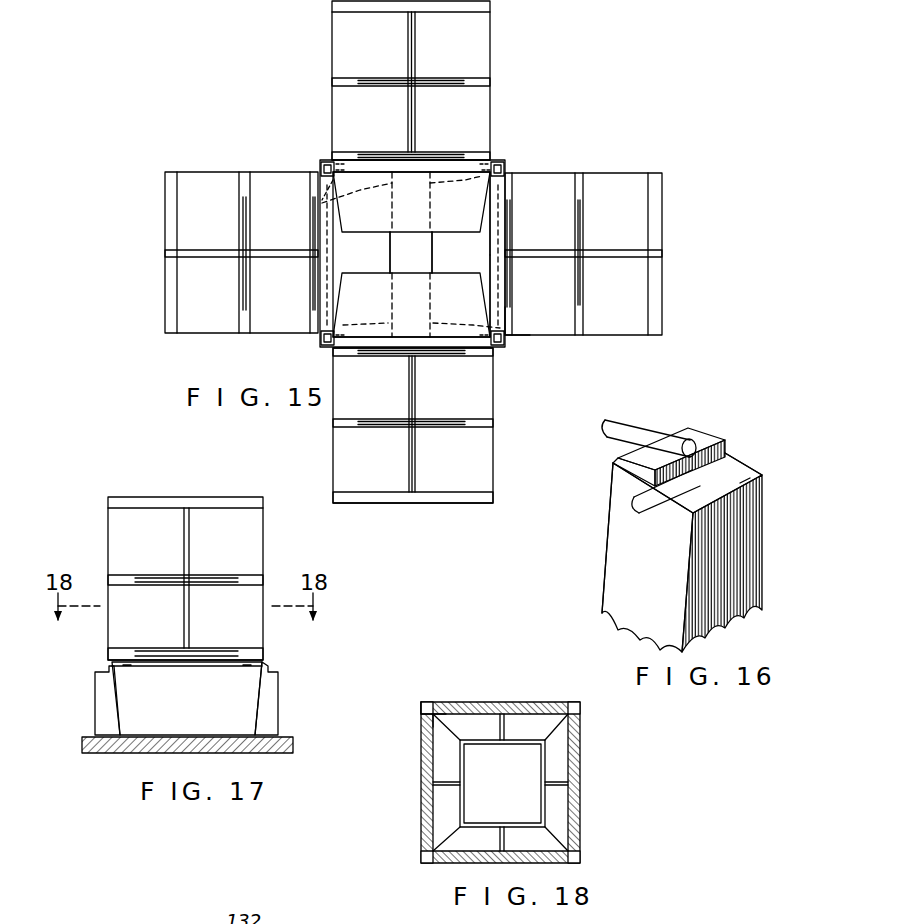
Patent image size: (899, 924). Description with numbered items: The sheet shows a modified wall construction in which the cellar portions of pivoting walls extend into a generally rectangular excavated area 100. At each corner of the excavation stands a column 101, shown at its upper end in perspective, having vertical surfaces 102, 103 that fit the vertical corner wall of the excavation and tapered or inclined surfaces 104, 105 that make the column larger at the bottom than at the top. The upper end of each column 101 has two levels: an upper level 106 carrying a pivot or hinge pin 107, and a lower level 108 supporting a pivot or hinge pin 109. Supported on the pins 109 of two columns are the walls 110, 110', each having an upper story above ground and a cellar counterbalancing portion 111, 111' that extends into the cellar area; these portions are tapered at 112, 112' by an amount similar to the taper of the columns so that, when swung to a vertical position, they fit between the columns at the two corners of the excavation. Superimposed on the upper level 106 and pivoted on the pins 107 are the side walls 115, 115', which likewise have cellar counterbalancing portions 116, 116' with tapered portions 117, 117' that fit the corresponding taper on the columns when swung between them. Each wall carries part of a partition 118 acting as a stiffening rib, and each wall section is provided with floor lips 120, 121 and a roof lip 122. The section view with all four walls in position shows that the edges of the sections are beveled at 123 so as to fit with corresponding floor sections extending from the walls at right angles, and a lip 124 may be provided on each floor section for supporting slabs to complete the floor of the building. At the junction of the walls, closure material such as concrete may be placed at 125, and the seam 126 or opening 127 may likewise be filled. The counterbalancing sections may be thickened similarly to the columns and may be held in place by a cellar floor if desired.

In FIG. 15, the excavated area 100 is at (415, 263).
In FIG. 15, the column 101 is at (322, 162).
In FIG. 17, the column 101 is at (90, 713).
In FIG. 16, the column 101 is at (600, 548).
In FIG. 16, the vertical surface 102 is at (737, 468).
In FIG. 16, the vertical surface 103 is at (738, 550).
In FIG. 16, the tapered surface 104 is at (622, 590).
In FIG. 17, the tapered surface 105 is at (258, 713).
In FIG. 16, the tapered surface 105 is at (612, 507).
In FIG. 16, the upper level 106 is at (696, 433).
In FIG. 16, the pivot or hinge pin 107 is at (664, 405).
In FIG. 16, the lower level 108 is at (742, 484).
In FIG. 16, the pivot or hinge pin 109 is at (658, 512).
In FIG. 15, the wall 110 is at (583, 238).
In FIG. 15, the wall 110' is at (241, 232).
In FIG. 15, the cellar counterbalancing portion 111 is at (453, 252).
In FIG. 17, the cellar counterbalancing portion 111 is at (187, 698).
In FIG. 15, the cellar counterbalancing portion 111' is at (363, 252).
In FIG. 15, the taper 112 is at (437, 202).
In FIG. 15, the taper 112' is at (297, 198).
In FIG. 15, the side wall 115 is at (444, 80).
In FIG. 15, the side wall 115' is at (441, 425).
In FIG. 15, the cellar counterbalancing portion 116 is at (406, 202).
In FIG. 15, the cellar counterbalancing portion 116' is at (416, 306).
In FIG. 15, the tapered portion 117 is at (523, 213).
In FIG. 15, the tapered portion 117' is at (521, 296).
In FIG. 15, the partition 118 is at (412, 60).
In FIG. 17, the partition 118 is at (217, 543).
In FIG. 18, the partition 118 is at (502, 718).
In FIG. 15, the floor lip 120 is at (510, 322).
In FIG. 17, the floor lip 120 is at (230, 655).
In FIG. 18, the floor lip 120 is at (537, 716).
In FIG. 15, the floor lip 121 is at (582, 320).
In FIG. 17, the floor lip 121 is at (243, 572).
In FIG. 15, the roof lip 122 is at (663, 306).
In FIG. 17, the roof lip 122 is at (255, 497).
In FIG. 18, the beveled edge 123 is at (571, 728).
In FIG. 18, the lip 124 is at (542, 802).
In FIG. 18, the closure material 125 is at (421, 706).
In FIG. 18, the seam 126 is at (446, 735).
In FIG. 18, the opening 127 is at (452, 684).